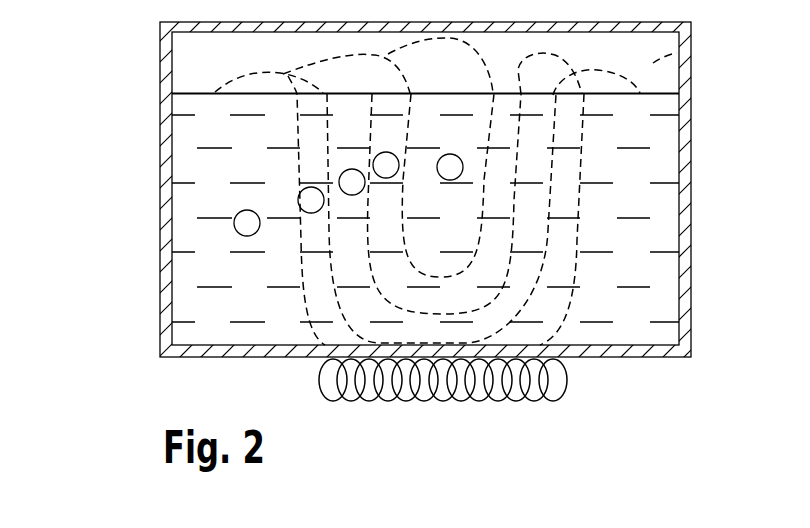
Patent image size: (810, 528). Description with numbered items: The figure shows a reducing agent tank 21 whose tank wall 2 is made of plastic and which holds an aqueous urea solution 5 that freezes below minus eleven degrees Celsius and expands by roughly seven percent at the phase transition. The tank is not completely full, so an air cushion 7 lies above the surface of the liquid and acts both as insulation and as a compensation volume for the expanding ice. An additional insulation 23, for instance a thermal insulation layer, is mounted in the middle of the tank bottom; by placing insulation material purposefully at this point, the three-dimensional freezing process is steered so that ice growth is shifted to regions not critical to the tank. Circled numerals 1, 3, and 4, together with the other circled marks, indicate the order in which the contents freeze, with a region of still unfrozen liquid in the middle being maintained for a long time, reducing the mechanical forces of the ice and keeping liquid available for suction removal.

The tank 21 is at (132, 110).
The tank wall 2 is at (691, 183).
The aqueous urea solution 5 is at (691, 278).
The air cushion 7 is at (691, 51).
The insulation 23 is at (512, 401).
The circled numeral 1 is at (247, 223).
The circled numeral 3 is at (352, 182).
The circled numeral 4 is at (386, 165).